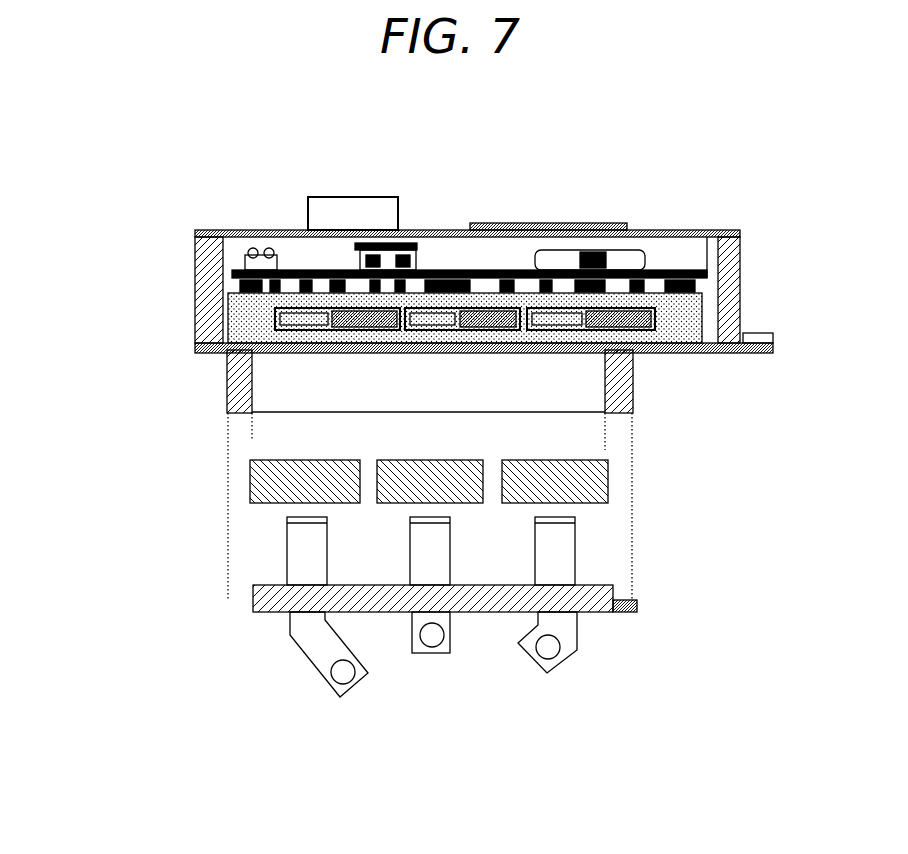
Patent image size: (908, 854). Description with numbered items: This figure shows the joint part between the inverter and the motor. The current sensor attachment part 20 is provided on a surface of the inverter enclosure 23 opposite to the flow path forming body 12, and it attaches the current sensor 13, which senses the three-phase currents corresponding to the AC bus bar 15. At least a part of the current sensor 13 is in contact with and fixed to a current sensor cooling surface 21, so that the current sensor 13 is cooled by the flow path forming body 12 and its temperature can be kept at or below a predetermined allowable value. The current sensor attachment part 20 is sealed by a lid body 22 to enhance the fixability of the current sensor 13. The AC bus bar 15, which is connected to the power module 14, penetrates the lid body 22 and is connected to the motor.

The flow path forming body 12 is at (690, 322).
The current sensor 13 is at (423, 457).
The power module 14 is at (305, 318).
The AC bus bar 15 is at (310, 658).
The current sensor attachment part 20 is at (285, 381).
The current sensor cooling surface 21 is at (474, 366).
The lid body 22 is at (250, 605).
The inverter enclosure 23 is at (743, 230).